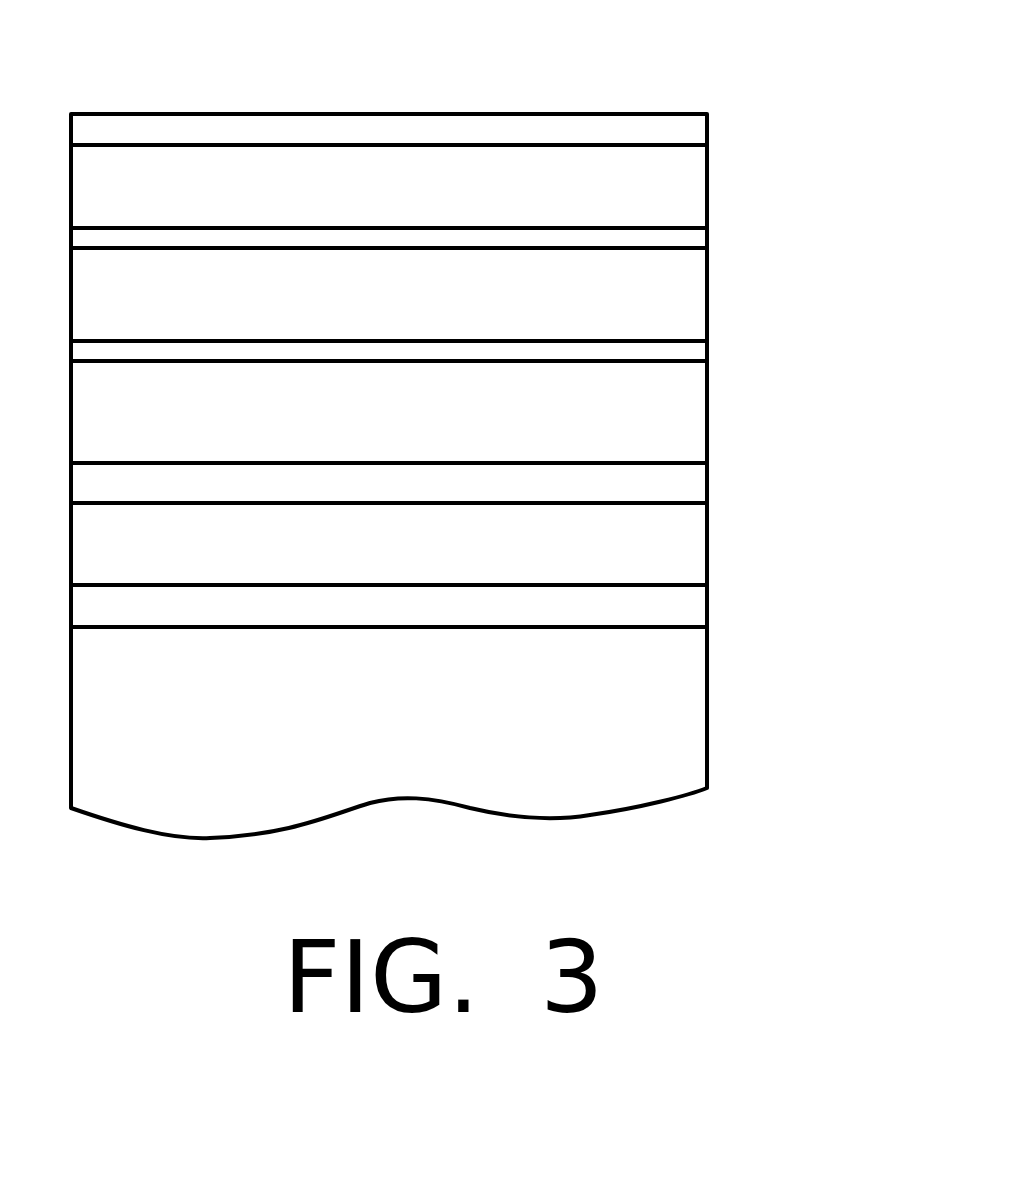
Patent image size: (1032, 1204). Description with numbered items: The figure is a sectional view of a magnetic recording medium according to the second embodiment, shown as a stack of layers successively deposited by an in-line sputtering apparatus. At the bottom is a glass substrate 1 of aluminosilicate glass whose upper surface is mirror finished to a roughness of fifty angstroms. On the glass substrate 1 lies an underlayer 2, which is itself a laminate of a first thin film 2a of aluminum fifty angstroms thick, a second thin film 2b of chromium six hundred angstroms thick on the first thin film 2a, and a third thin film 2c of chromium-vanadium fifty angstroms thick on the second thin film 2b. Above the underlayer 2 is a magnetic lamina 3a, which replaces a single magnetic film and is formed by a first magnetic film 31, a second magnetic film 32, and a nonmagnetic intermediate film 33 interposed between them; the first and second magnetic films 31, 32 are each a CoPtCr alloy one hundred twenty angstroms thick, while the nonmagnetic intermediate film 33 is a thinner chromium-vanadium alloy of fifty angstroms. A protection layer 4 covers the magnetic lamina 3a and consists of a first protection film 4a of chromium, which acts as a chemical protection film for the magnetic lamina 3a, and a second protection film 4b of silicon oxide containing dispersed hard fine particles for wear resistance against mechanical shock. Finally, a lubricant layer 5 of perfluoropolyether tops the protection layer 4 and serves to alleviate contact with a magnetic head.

The glass substrate 1 is at (695, 705).
The underlayer 2 is at (496, 540).
The first thin film 2a is at (695, 603).
The second thin film 2b is at (695, 543).
The third thin film 2c is at (695, 480).
The magnetic lamina 3a is at (509, 355).
The first magnetic film 31 is at (695, 410).
The second magnetic film 32 is at (695, 297).
The nonmagnetic intermediate film 33 is at (695, 348).
The protection layer 4 is at (494, 203).
The first protection film 4a is at (695, 235).
The second protection film 4b is at (695, 173).
The lubricant layer 5 is at (438, 125).